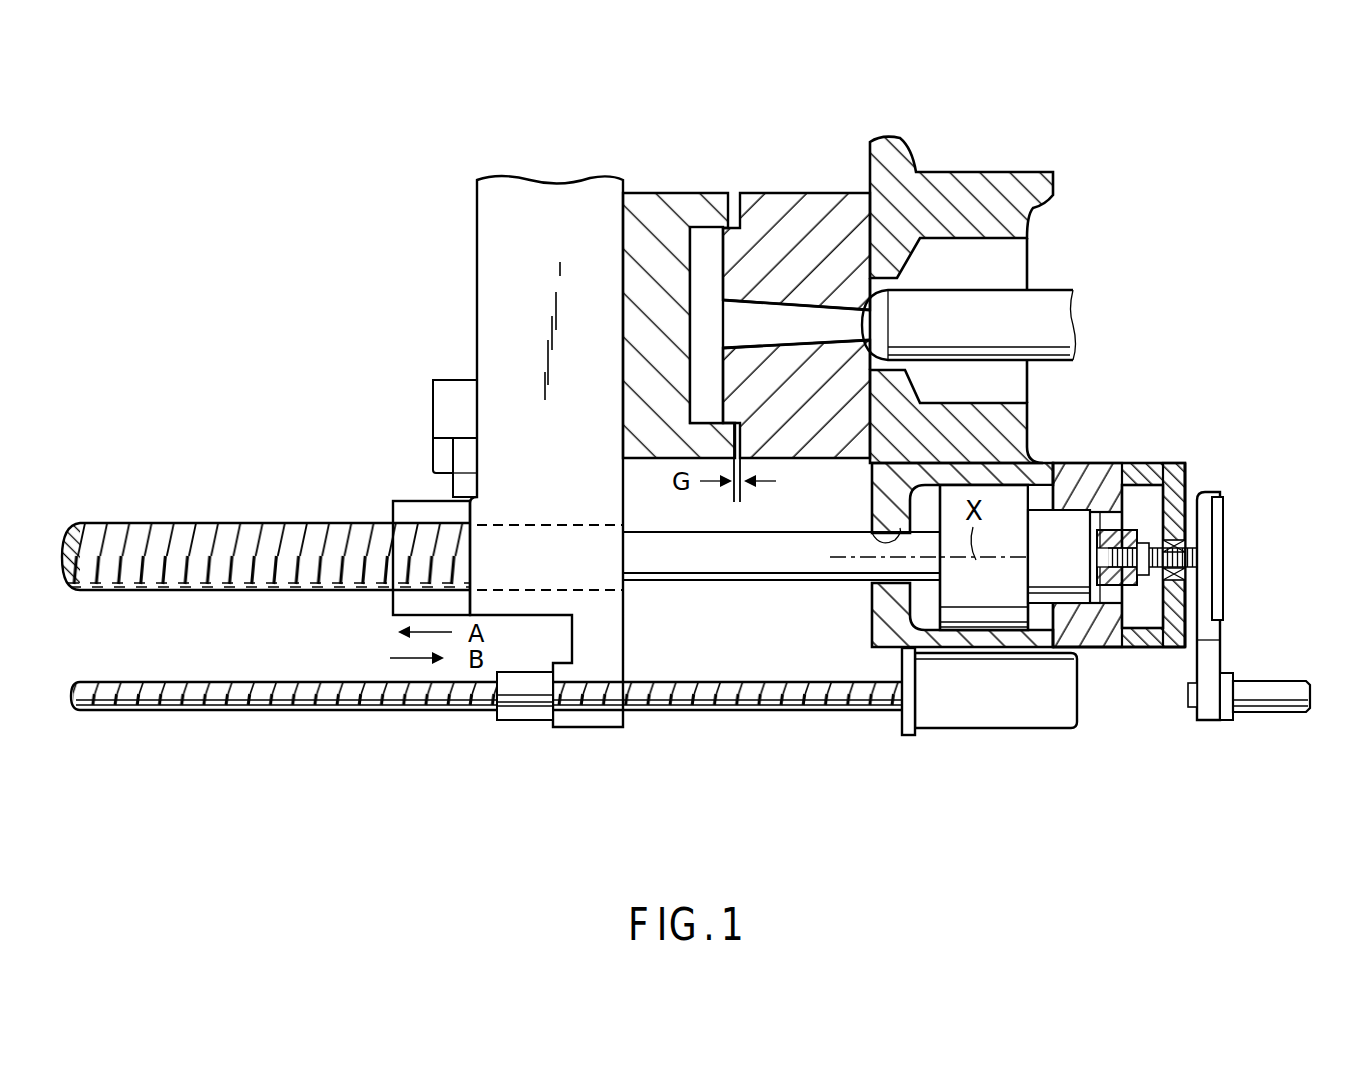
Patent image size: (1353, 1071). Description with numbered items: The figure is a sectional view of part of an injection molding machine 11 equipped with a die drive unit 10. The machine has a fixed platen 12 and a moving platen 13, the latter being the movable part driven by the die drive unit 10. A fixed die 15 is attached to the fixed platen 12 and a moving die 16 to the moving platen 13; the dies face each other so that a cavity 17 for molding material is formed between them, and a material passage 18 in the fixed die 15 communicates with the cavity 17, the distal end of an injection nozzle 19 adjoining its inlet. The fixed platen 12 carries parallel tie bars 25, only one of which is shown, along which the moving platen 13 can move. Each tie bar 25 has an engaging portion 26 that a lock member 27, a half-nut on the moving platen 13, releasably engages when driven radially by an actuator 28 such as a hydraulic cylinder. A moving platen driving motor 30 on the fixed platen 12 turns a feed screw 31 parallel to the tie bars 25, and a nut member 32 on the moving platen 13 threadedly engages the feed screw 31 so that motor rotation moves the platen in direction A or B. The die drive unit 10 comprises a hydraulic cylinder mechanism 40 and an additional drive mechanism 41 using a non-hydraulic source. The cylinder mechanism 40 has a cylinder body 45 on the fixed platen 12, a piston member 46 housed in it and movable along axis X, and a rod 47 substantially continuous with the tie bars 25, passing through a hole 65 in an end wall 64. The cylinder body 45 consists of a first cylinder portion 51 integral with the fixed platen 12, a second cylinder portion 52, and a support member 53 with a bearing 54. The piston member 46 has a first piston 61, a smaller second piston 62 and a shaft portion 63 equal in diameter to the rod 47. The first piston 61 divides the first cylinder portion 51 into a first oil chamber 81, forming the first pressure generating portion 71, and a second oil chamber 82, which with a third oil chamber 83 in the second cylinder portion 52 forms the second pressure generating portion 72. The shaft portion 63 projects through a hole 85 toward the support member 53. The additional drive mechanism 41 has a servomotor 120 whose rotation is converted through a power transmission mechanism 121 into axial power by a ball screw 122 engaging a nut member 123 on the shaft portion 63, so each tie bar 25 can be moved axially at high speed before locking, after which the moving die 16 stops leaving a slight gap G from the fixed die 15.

The die drive unit 10 is at (1170, 452).
The injection molding machine 11 is at (1048, 98).
The fixed platen 12 is at (970, 180).
The moving platen 13 is at (545, 230).
The fixed die 15 is at (768, 200).
The moving die 16 is at (663, 225).
The cavity 17 is at (705, 262).
The material passage 18 is at (790, 300).
The injection nozzle 19 is at (1045, 300).
The tie bar 25 is at (205, 540).
The engaging portion 26 is at (393, 525).
The lock member 27 is at (453, 498).
The actuator 28 is at (433, 412).
The moving platen driving motor 30 is at (930, 690).
The feed screw 31 is at (713, 700).
The nut member 32 is at (523, 705).
The cylinder mechanism 40 is at (1140, 652).
The additional drive mechanism 41 is at (1267, 625).
The cylinder body 45 is at (1005, 462).
The piston member 46 is at (1060, 520).
The rod 47 is at (735, 570).
The first cylinder portion 51 is at (980, 633).
The second cylinder portion 52 is at (1085, 610).
The support member 53 is at (1195, 468).
The bearing 54 is at (1223, 500).
The first piston 61 is at (1010, 633).
The second piston 62 is at (1078, 530).
The shaft portion 63 is at (1178, 648).
The end wall 64 is at (876, 480).
The hole 65 is at (872, 533).
The first pressure generating portion 71 is at (903, 635).
The second pressure generating portion 72 is at (1060, 632).
The first oil chamber 81 is at (884, 606).
The second oil chamber 82 is at (1045, 632).
The third oil chamber 83 is at (1094, 640).
The hole 85 is at (1120, 540).
The servomotor 120 is at (1260, 700).
The power transmission mechanism 121 is at (1222, 600).
The ball screw 122 is at (1192, 552).
The nut member 123 is at (1192, 640).